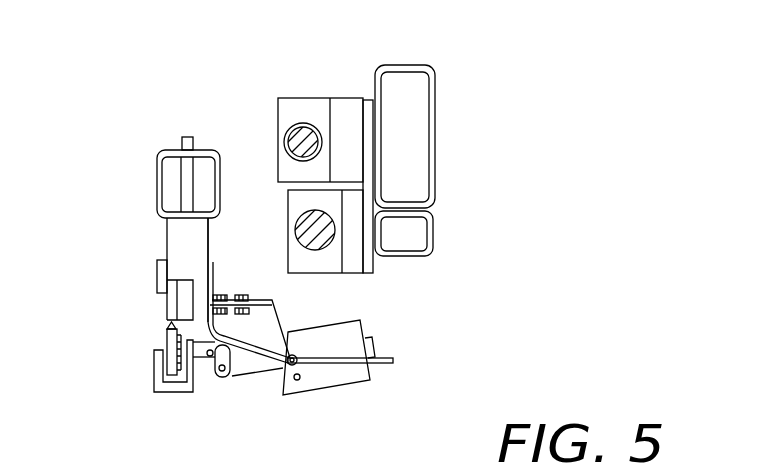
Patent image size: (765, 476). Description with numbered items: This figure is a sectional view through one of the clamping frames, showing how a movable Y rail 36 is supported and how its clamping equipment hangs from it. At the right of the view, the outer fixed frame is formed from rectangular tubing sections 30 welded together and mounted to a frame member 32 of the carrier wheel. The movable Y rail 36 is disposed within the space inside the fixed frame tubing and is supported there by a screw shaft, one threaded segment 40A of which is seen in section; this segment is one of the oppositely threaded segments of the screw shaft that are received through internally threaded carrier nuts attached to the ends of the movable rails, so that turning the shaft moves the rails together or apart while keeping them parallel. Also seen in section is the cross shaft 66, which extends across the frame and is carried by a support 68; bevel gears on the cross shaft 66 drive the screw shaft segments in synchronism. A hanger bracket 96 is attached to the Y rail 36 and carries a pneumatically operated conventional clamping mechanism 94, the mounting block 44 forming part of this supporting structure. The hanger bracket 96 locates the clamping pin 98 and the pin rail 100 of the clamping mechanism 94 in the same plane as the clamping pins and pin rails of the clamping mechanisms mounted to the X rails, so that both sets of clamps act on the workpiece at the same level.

The rectangular tubing sections 30 is at (438, 108).
The frame members 32 is at (434, 222).
The movable Y rails 36 is at (156, 182).
The threaded segment 40A is at (336, 242).
The mounting block 44 is at (326, 278).
The cross shaft 66 is at (289, 132).
The support 68 is at (348, 95).
The clamping mechanism 94 is at (243, 386).
The hanger bracket 96 is at (162, 240).
The clamping pin 98 is at (158, 335).
The pin rail 100 is at (166, 320).